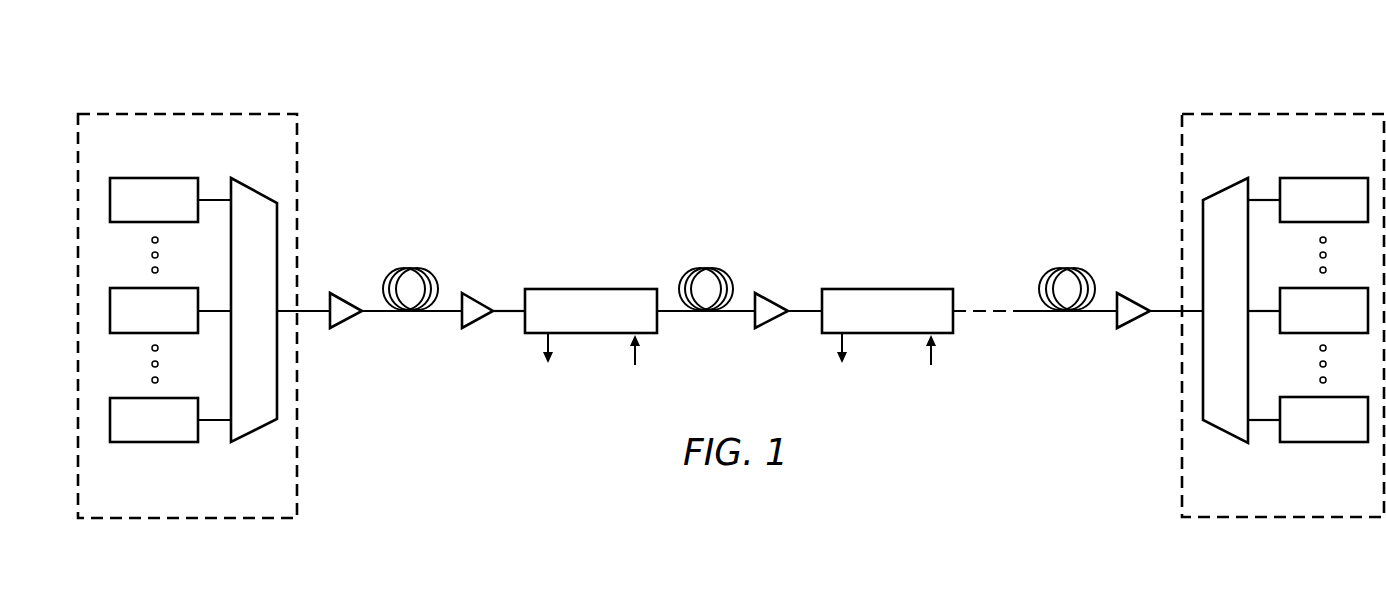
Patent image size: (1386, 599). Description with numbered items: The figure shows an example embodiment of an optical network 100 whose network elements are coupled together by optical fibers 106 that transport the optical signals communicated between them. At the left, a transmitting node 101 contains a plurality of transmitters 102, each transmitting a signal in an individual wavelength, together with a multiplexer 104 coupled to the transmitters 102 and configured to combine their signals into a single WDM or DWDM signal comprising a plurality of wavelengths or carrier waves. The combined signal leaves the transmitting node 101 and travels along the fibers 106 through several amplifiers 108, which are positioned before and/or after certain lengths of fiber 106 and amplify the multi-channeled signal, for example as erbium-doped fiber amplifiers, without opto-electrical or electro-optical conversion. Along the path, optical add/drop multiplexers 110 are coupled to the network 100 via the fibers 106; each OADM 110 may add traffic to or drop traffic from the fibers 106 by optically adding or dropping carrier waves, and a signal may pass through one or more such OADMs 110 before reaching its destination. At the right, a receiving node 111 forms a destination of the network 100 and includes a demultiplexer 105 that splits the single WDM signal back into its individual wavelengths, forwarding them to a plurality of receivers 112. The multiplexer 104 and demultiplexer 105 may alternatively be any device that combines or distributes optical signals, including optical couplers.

The optical network 100 is at (400, 95).
The transmitting node 101 is at (182, 103).
The transmitter 102 is at (148, 177).
The multiplexer 104 is at (250, 186).
The demultiplexer 105 is at (1226, 188).
The optical fiber 106 is at (410, 266).
The amplifier 108 is at (345, 329).
The optical add/drop multiplexer 110 is at (590, 288).
The receiving node 111 is at (1295, 103).
The receiver 112 is at (1330, 177).